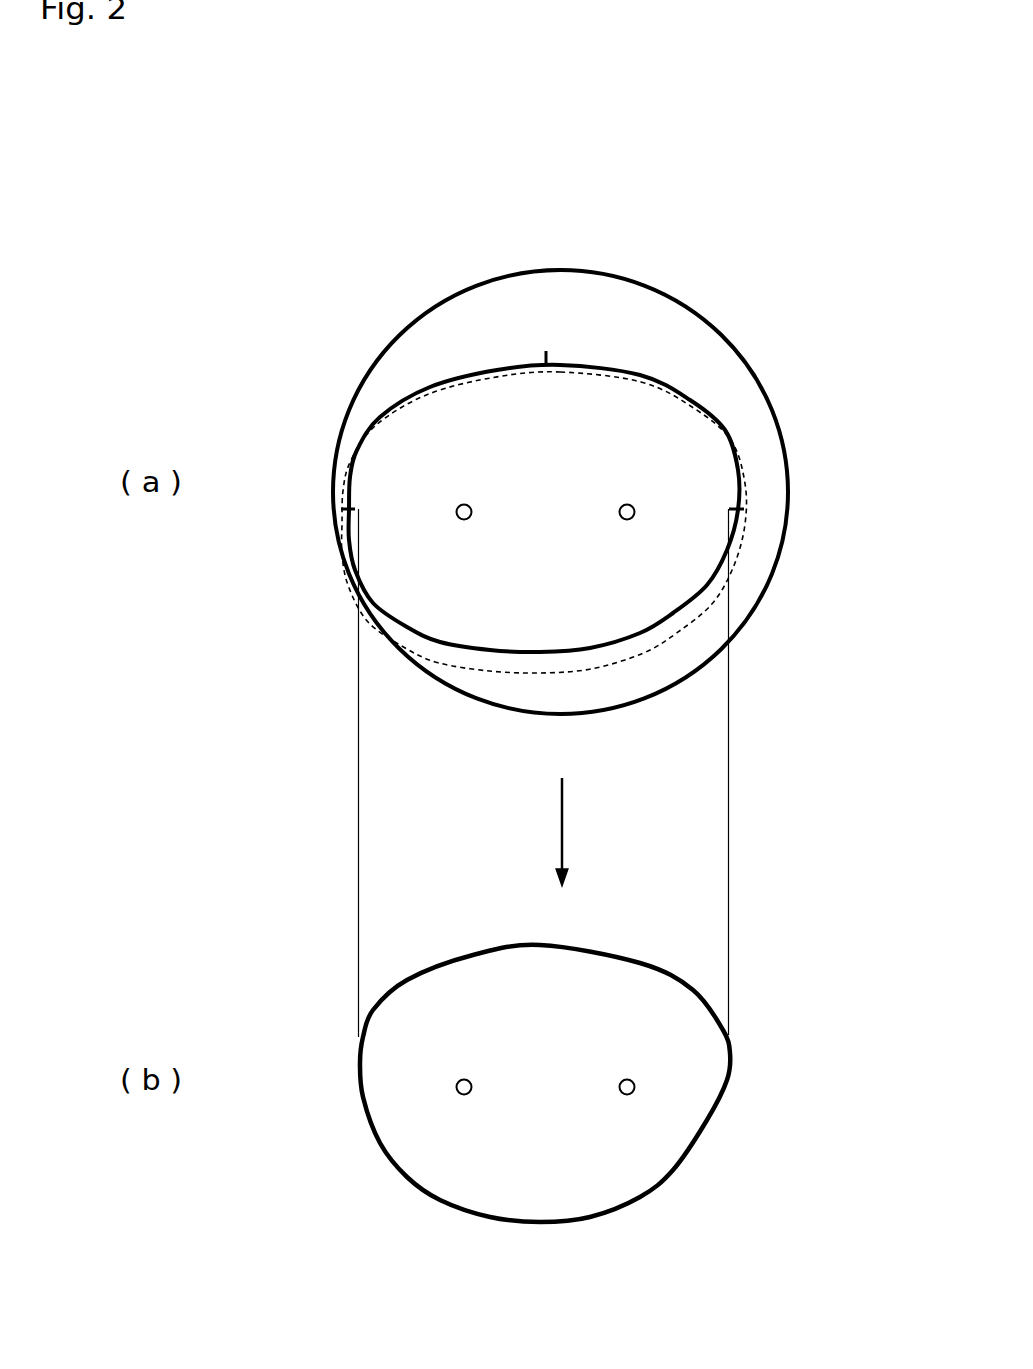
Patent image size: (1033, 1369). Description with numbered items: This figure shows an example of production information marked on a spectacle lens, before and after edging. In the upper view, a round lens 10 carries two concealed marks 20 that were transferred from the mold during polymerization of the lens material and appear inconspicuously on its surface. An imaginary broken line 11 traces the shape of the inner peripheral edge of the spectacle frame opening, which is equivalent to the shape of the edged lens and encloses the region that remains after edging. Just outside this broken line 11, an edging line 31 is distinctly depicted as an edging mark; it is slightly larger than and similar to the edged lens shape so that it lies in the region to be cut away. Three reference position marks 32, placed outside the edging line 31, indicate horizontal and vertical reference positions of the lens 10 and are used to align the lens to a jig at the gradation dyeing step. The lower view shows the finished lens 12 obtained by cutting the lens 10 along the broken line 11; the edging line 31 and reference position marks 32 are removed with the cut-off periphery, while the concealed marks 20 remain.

The lens 10 is at (673, 300).
The imaginary broken line 11 is at (680, 403).
The finished lens 12 is at (617, 1187).
The concealed marks 20 is at (461, 503).
The edging line 31 is at (605, 372).
The reference position marks 32 is at (546, 360).